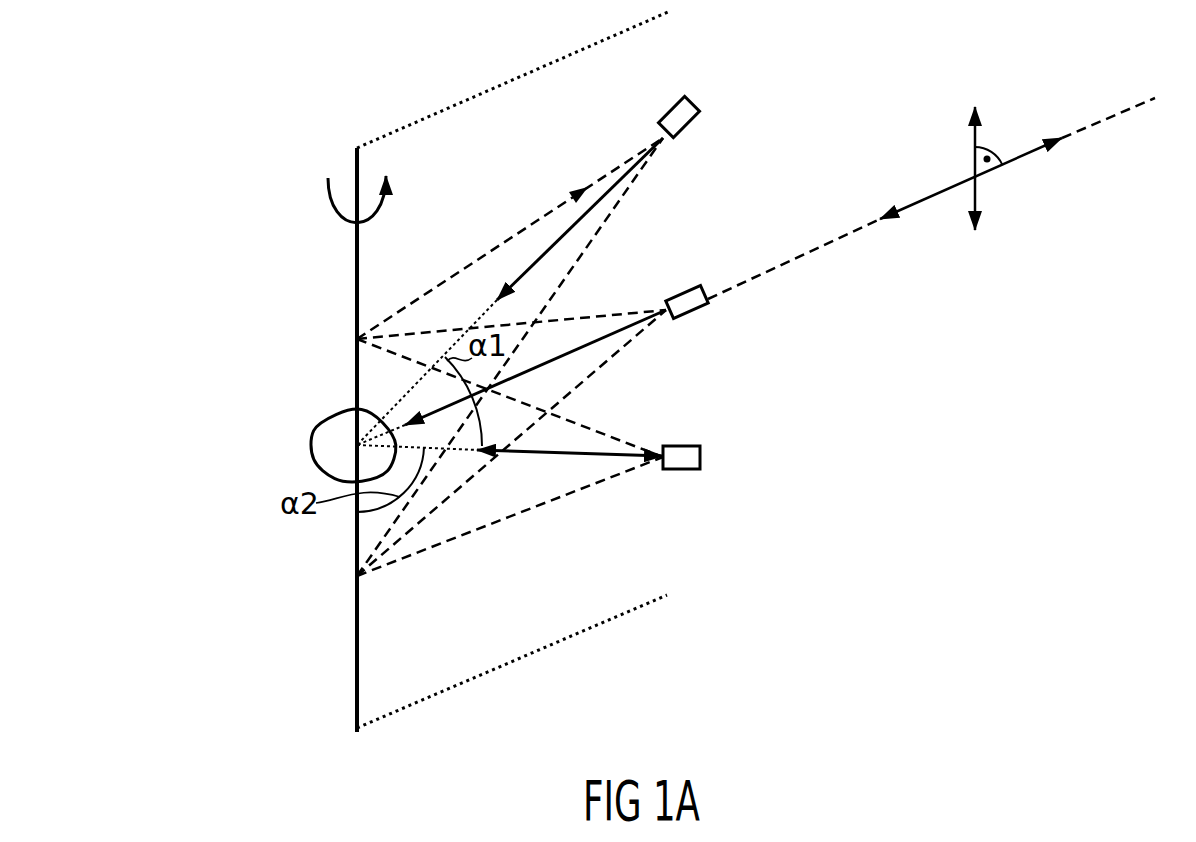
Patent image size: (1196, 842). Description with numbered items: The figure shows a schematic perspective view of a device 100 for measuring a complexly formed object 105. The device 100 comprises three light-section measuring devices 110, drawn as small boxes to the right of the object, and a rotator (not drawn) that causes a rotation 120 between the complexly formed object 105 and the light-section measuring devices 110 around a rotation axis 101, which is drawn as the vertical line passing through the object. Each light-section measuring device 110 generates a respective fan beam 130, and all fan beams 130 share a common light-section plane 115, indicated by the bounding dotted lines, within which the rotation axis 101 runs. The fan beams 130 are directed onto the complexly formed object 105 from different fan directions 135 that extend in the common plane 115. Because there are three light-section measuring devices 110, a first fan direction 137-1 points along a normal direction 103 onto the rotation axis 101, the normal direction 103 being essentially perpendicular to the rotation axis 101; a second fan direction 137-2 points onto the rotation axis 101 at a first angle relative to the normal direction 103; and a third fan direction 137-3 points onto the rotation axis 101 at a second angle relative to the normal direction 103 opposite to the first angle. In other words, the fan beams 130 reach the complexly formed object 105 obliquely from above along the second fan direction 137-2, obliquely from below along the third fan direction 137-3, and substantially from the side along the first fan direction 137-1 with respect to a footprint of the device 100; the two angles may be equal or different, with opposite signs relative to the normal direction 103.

The device 100 is at (187, 69).
The rotation axis 101 is at (355, 655).
The normal direction 103 is at (1002, 146).
The complexly formed object 105 is at (313, 440).
The light-section measuring device 110 is at (697, 130).
The common light-section plane 115 is at (548, 620).
The rotation 120 is at (328, 199).
The fan beam 130 is at (626, 357).
The fan directions 135 is at (580, 196).
The first fan direction 137-1 is at (615, 331).
The second fan direction 137-2 is at (540, 258).
The third fan direction 137-3 is at (577, 455).